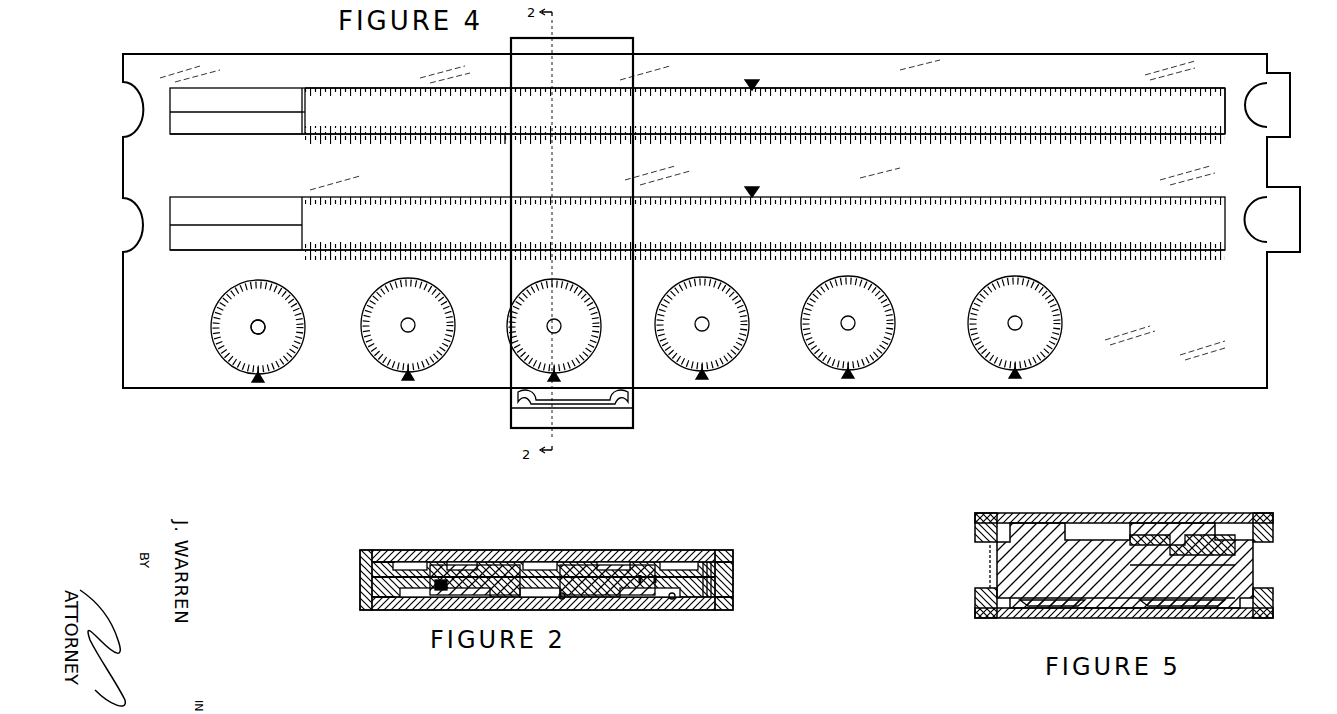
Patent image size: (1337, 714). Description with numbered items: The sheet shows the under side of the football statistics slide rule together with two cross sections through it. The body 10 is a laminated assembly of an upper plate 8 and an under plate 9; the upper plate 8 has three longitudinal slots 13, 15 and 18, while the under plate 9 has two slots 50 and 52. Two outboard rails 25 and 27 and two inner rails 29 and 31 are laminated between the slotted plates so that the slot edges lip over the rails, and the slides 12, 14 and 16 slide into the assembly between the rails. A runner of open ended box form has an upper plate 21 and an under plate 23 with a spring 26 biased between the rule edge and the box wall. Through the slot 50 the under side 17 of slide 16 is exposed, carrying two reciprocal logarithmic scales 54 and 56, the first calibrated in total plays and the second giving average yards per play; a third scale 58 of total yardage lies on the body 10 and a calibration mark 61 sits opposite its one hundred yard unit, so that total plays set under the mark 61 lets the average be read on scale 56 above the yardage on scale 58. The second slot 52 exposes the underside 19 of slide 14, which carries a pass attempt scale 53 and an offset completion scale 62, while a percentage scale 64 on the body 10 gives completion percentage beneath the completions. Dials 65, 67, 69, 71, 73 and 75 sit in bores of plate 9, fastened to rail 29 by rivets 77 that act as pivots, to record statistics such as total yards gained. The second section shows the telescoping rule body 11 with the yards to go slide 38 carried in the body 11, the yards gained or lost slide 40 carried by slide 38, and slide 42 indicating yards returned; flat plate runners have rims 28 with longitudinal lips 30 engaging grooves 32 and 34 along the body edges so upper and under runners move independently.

In FIG. 2, the upper plate 8 is at (360, 568).
In FIG. 2, the under plate 9 is at (360, 598).
In FIG. 4, the body 10 is at (595, 63).
In FIG. 5, the rule body 11 is at (1255, 568).
In FIG. 2, the slide 12 is at (415, 562).
In FIG. 2, the longitudinal slot 13 is at (405, 550).
In FIG. 2, the slide 14 is at (540, 560).
In FIG. 2, the longitudinal slot 15 is at (520, 562).
In FIG. 4, the slide 16 is at (828, 103).
In FIG. 2, the slide 16 is at (685, 565).
In FIG. 4, the under side 17 is at (305, 113).
In FIG. 2, the longitudinal slot 18 is at (640, 565).
In FIG. 4, the underside 19 is at (1288, 250).
In FIG. 2, the upper plate 21 is at (368, 548).
In FIG. 2, the under plate 23 is at (378, 610).
In FIG. 2, the outboard rail 25 is at (365, 580).
In FIG. 2, the spring 26 is at (735, 568).
In FIG. 2, the outboard rail 27 is at (735, 590).
In FIG. 5, the rim 28 is at (975, 528).
In FIG. 2, the inner rail 29 is at (478, 570).
In FIG. 5, the longitudinal lip 30 is at (985, 548).
In FIG. 2, the inner rail 31 is at (598, 565).
In FIG. 5, the groove 32 is at (985, 565).
In FIG. 5, the edge groove 34 is at (990, 612).
In FIG. 5, the yards to go slide 38 is at (1255, 518).
In FIG. 5, the yards gained or lost slide 40 is at (1205, 520).
In FIG. 5, the slide 42 is at (1050, 523).
In FIG. 4, the longitudinal slot 50 is at (668, 87).
In FIG. 2, the longitudinal slot 50 is at (675, 598).
In FIG. 4, the second slot 52 is at (1215, 197).
In FIG. 2, the second slot 52 is at (565, 598).
In FIG. 4, the scale 53 is at (910, 192).
In FIG. 4, the scale 54 is at (300, 90).
In FIG. 4, the scale 56 is at (322, 135).
In FIG. 4, the third scale 58 is at (510, 150).
In FIG. 4, the calibration mark 61 is at (752, 82).
In FIG. 4, the scale 62 is at (962, 240).
In FIG. 4, the third scale 64 is at (1178, 255).
In FIG. 4, the dial means 65 is at (225, 338).
In FIG. 4, the dial 67 is at (385, 345).
In FIG. 4, the dial 69 is at (530, 345).
In FIG. 4, the dial 71 is at (678, 345).
In FIG. 4, the dial 73 is at (838, 345).
In FIG. 4, the dial 75 is at (1005, 345).
In FIG. 4, the rivet 77 is at (250, 328).
In FIG. 2, the rivet 77 is at (440, 592).